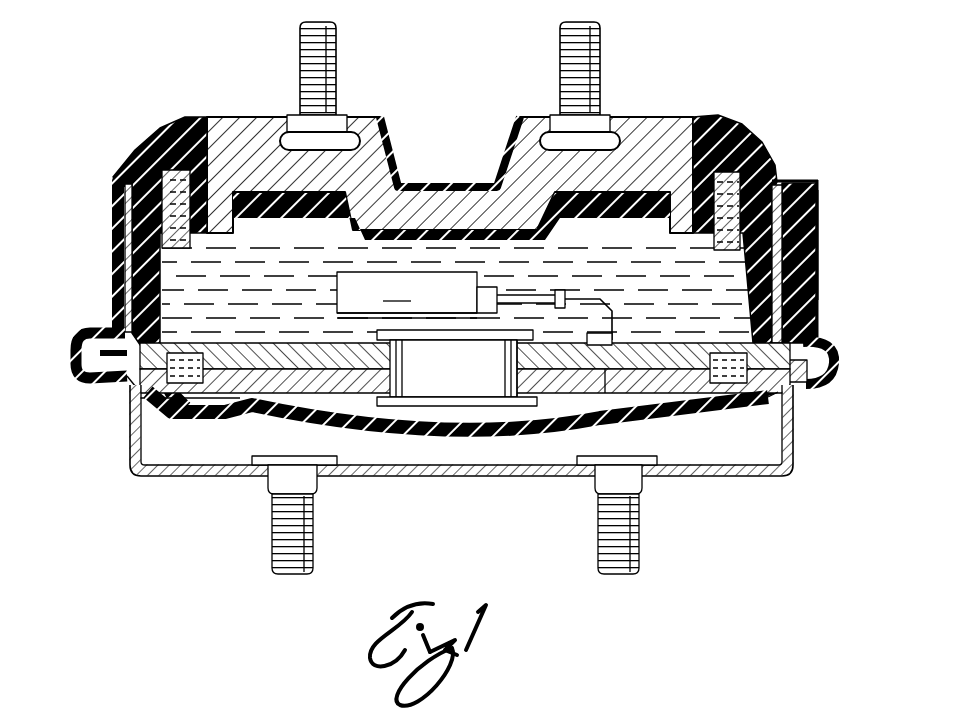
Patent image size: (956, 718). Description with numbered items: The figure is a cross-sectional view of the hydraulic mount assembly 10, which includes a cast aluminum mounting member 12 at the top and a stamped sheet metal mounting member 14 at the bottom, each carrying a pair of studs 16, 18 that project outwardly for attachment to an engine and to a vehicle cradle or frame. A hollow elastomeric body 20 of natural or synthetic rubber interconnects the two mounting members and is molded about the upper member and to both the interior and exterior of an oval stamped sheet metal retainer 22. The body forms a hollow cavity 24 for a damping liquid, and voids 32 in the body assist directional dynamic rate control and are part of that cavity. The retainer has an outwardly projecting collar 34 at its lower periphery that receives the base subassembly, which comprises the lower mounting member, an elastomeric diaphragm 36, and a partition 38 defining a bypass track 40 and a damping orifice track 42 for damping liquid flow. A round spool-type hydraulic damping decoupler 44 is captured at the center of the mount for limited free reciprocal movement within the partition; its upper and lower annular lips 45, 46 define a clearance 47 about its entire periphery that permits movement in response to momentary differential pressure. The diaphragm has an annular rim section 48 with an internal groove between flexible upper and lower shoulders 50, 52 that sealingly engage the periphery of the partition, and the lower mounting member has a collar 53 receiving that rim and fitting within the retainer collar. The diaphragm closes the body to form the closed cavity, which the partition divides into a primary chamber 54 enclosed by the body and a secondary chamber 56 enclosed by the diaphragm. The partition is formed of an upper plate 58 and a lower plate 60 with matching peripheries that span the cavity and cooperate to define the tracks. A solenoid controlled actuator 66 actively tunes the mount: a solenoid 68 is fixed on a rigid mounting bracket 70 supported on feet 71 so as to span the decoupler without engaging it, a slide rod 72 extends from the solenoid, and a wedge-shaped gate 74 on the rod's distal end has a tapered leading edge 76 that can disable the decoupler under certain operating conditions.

The mount assembly 10 is at (190, 100).
The mounting member 12 is at (633, 123).
The mounting member 14 is at (743, 478).
The studs 16 is at (555, 47).
The studs 18 is at (280, 540).
The elastomeric body 20 is at (723, 147).
The retainer 22 is at (815, 200).
The cavity 24 is at (817, 267).
The voids 32 is at (138, 150).
The collar 34 is at (830, 345).
The elastomeric diaphragm 36 is at (491, 430).
The partition 38 is at (745, 417).
The bypass track 40 is at (605, 395).
The damping orifice track 42 is at (779, 410).
The hydraulic damping decoupler 44 is at (452, 378).
The annular lip 45 is at (392, 333).
The annular lip 46 is at (391, 405).
The clearance 47 is at (513, 378).
The annular rim section 48 is at (117, 385).
The upper shoulder 50 is at (121, 328).
The lower shoulder 52 is at (130, 393).
The collar 53 is at (797, 384).
The primary chamber 54 is at (255, 282).
The secondary chamber 56 is at (372, 405).
The upper plate 58 is at (818, 293).
The lower plate 60 is at (685, 394).
The solenoid controlled actuator 66 is at (376, 250).
The solenoid 68 is at (417, 295).
The mounting bracket 70 is at (330, 330).
The feet 71 is at (318, 345).
The slide rod 72 is at (534, 294).
The gate 74 is at (588, 343).
The tapered leading edge 76 is at (590, 340).